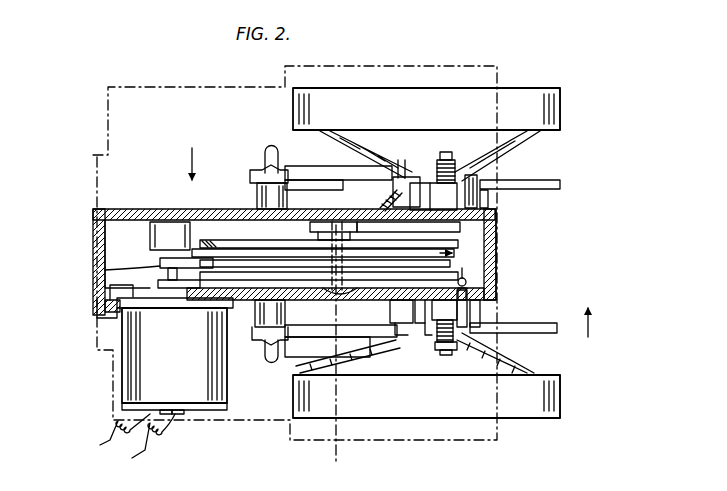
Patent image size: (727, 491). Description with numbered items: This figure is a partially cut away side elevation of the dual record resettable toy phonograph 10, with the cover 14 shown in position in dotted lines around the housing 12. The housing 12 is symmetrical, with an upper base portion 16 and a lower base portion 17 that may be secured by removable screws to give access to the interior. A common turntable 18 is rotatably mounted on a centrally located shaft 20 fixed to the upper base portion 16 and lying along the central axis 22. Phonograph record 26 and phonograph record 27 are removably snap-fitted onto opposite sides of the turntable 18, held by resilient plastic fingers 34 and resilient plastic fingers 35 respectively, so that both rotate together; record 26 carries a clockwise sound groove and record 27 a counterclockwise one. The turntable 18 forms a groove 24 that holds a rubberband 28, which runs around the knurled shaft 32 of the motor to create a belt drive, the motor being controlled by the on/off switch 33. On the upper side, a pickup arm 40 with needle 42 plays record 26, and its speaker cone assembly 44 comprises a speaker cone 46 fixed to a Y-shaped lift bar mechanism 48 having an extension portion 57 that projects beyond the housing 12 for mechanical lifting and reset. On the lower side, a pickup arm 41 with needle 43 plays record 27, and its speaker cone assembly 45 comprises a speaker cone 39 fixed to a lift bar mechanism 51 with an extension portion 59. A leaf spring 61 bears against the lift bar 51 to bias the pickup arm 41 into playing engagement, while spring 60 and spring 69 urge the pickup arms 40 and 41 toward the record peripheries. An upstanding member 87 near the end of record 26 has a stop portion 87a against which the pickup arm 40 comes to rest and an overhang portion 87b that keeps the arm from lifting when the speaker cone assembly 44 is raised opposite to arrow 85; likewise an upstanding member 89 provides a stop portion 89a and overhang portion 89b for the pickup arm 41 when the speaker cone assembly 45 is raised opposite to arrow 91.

The dual record resettable toy phonograph 10 is at (565, 248).
The housing 12 is at (92, 238).
The cover 14 is at (198, 85).
The upper base portion 16 is at (118, 210).
The lower base portion 17 is at (100, 315).
The turntable 18 is at (495, 245).
The shaft 20 is at (270, 240).
The central axis 22 is at (333, 455).
The groove 24 is at (495, 258).
The phonograph record 26 is at (495, 238).
The phonograph record 27 is at (497, 268).
The rubberband 28 is at (160, 263).
The knurled shaft 32 is at (130, 282).
The on/off switch 33 is at (132, 387).
The resilient plastic fingers 34 is at (355, 226).
The resilient plastic fingers 35 is at (340, 298).
The speaker cone 39 is at (560, 385).
The pickup arm 40 is at (480, 168).
The pickup arm 41 is at (482, 312).
The phonograph needle 42 is at (386, 232).
The phonograph needle 43 is at (497, 290).
The speaker cone assembly 44 is at (462, 84).
The speaker cone assembly 45 is at (462, 420).
The speaker cone 46 is at (560, 112).
The lift bar mechanism 48 is at (556, 183).
The lift bar mechanism 51 is at (550, 336).
The extension portion 57 is at (530, 178).
The extension portion 59 is at (530, 330).
The spring 60 is at (443, 184).
The leaf spring 61 is at (300, 360).
The spring 69 is at (440, 345).
The arrow 85 is at (192, 150).
The upstanding member 87 is at (393, 170).
The stop member portion 87a is at (380, 203).
The overhang portion 87b is at (403, 176).
The upstanding member 89 is at (400, 325).
The stop member portion 89a is at (418, 320).
The overhang portion 89b is at (425, 338).
The arrow 91 is at (590, 325).